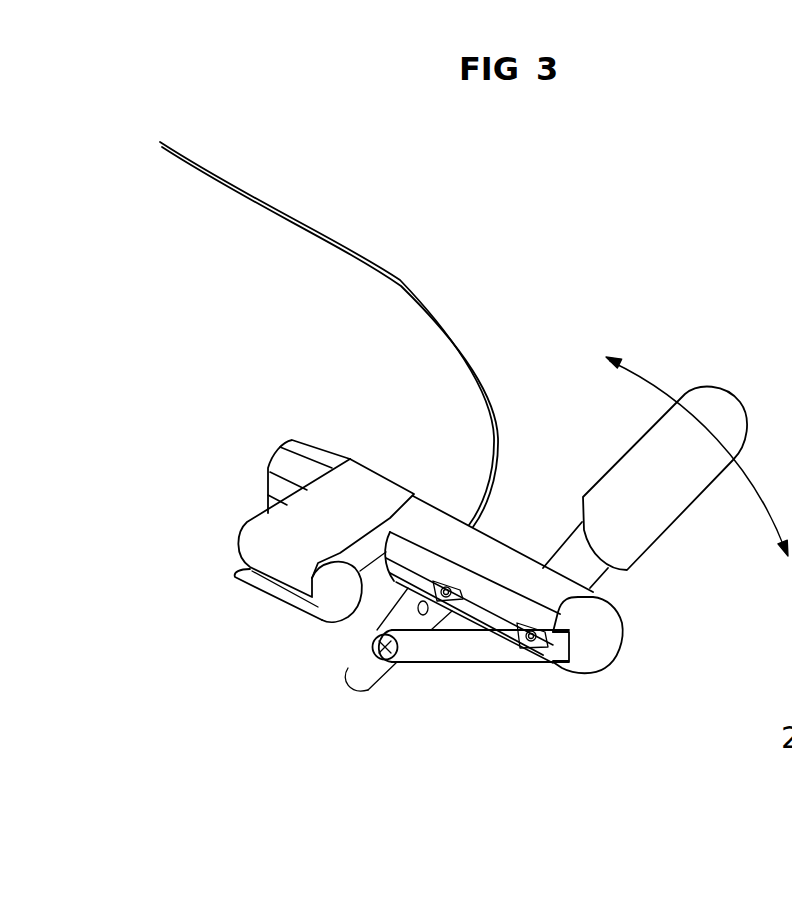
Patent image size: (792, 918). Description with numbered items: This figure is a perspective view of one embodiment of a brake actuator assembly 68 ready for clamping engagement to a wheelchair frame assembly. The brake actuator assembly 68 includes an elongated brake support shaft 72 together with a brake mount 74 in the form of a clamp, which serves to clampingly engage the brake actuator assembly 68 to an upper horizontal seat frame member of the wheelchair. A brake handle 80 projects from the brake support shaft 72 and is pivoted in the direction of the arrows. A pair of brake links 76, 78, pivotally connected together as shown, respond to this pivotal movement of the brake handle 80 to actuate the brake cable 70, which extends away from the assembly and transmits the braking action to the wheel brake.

The brake actuator assembly 68 is at (502, 545).
The brake cable 70 is at (302, 218).
The brake support shaft 72 is at (595, 630).
The brake mount 74 is at (292, 535).
The brake link 76 is at (363, 672).
The brake link 78 is at (442, 648).
The brake handle 80 is at (673, 482).